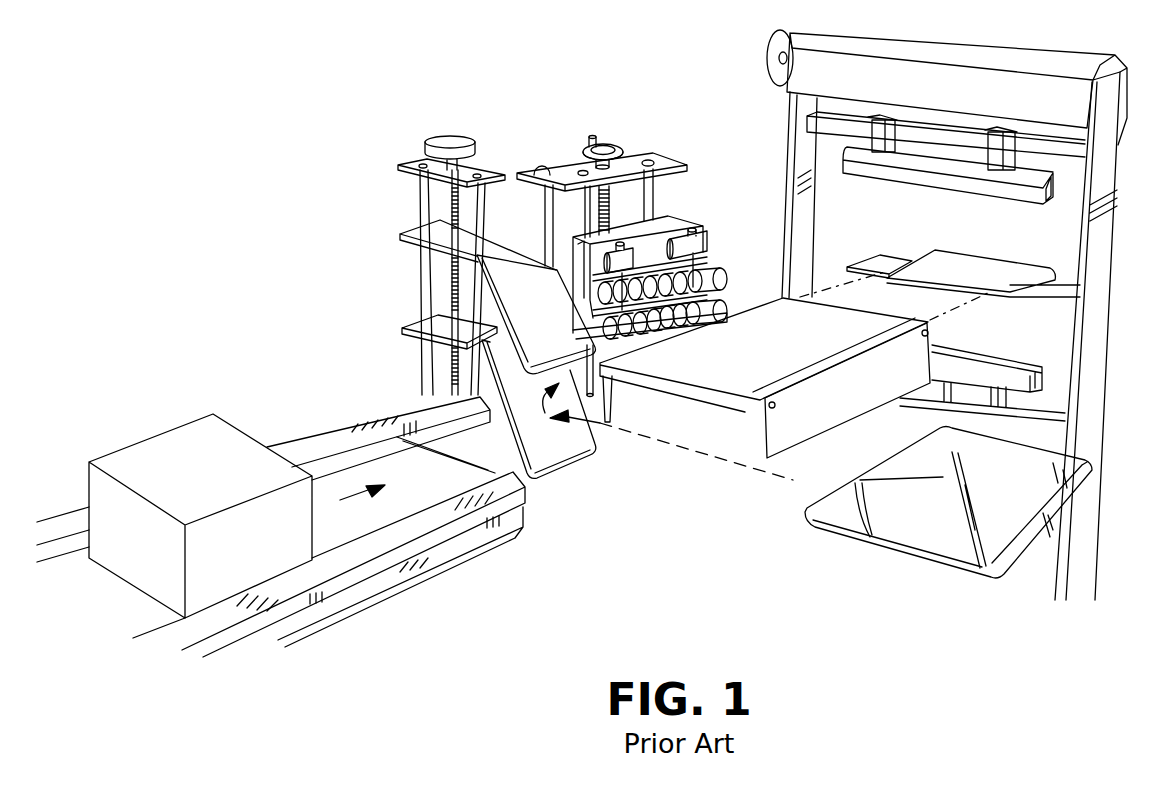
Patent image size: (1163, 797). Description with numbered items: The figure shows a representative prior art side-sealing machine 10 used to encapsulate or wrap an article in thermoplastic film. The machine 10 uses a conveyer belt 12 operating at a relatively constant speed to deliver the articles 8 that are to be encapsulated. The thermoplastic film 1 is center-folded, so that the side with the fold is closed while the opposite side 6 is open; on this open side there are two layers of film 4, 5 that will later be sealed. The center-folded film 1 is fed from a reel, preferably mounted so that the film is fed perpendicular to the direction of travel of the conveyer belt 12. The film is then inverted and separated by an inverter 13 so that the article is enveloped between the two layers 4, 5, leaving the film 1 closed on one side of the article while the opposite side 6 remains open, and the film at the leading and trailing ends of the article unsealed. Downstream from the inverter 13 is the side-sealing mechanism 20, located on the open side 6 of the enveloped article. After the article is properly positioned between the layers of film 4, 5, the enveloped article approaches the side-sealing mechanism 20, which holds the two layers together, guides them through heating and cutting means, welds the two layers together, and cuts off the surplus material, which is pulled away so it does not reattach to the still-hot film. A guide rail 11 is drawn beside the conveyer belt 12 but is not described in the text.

The thermoplastic film 1 is at (937, 538).
The film layer 4 is at (1087, 463).
The film layer 5 is at (1085, 528).
The open side 6 is at (1090, 517).
The article 8 is at (172, 436).
The side-sealing machine 10 is at (382, 202).
The guide rail 11 is at (306, 440).
The conveyer belt 12 is at (322, 530).
The inverter 13 is at (553, 478).
The side-sealing mechanism 20 is at (569, 159).